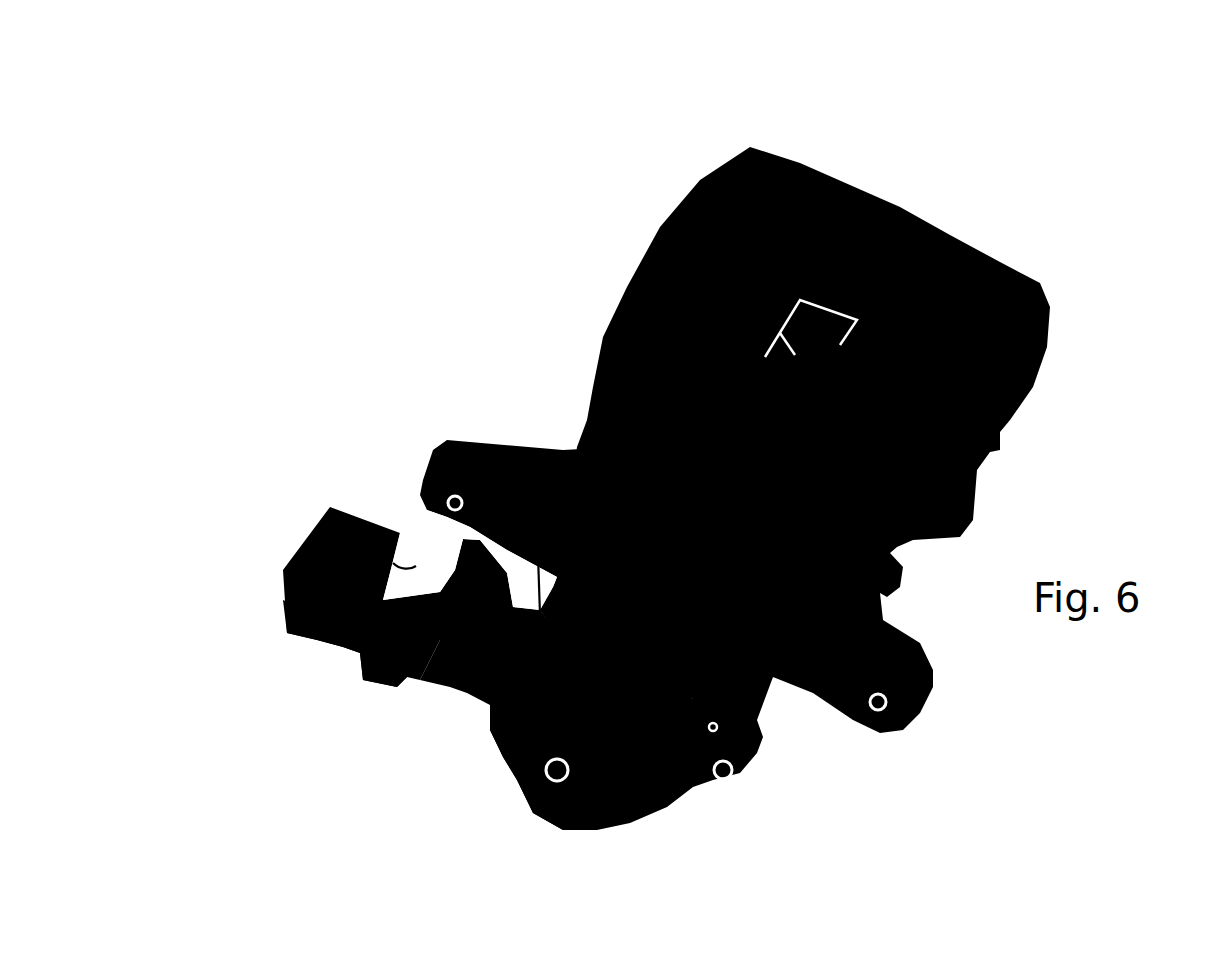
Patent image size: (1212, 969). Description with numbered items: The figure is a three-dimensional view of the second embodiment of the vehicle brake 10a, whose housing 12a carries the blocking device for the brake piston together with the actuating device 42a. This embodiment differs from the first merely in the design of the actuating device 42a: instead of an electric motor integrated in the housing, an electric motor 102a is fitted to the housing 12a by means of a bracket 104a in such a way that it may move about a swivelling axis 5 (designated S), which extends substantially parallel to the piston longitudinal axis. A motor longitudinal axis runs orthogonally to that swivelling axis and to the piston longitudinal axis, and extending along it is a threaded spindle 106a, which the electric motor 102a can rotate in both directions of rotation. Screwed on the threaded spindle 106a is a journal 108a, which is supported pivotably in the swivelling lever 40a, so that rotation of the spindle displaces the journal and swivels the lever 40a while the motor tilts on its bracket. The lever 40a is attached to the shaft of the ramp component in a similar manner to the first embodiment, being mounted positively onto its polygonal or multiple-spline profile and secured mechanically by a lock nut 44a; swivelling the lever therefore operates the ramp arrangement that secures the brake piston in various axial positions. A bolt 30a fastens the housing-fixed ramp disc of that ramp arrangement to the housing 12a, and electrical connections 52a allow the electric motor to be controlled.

The vehicle brake 10a is at (677, 472).
The housing 12a is at (1037, 280).
The bolt 30a is at (540, 810).
The swivelling lever 40a is at (597, 830).
The actuating device 42a is at (458, 735).
The lock nut 44a is at (540, 797).
The electrical connections 52a is at (293, 638).
The swivelling axis 5 is at (377, 680).
The electric motor 102a is at (283, 570).
The bracket 104a is at (310, 523).
The threaded spindle 106a is at (500, 443).
The journal 108a is at (765, 743).